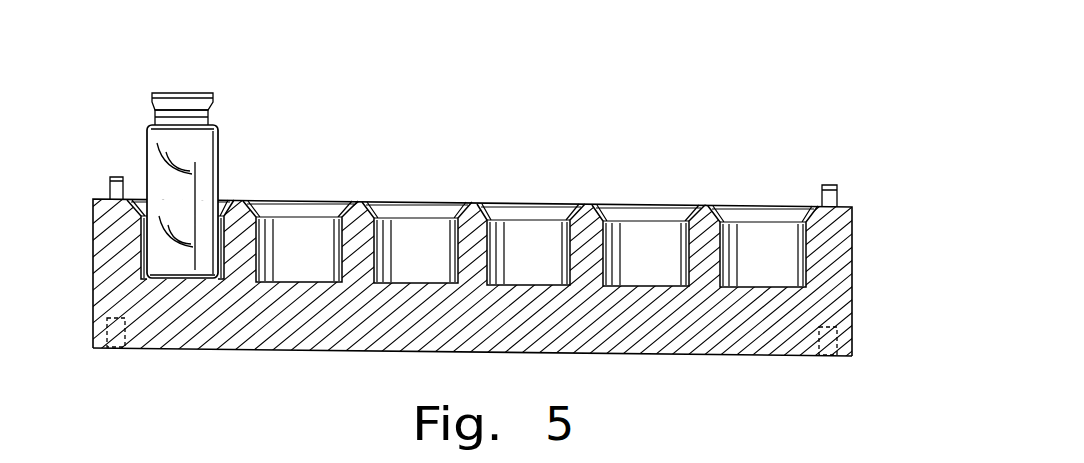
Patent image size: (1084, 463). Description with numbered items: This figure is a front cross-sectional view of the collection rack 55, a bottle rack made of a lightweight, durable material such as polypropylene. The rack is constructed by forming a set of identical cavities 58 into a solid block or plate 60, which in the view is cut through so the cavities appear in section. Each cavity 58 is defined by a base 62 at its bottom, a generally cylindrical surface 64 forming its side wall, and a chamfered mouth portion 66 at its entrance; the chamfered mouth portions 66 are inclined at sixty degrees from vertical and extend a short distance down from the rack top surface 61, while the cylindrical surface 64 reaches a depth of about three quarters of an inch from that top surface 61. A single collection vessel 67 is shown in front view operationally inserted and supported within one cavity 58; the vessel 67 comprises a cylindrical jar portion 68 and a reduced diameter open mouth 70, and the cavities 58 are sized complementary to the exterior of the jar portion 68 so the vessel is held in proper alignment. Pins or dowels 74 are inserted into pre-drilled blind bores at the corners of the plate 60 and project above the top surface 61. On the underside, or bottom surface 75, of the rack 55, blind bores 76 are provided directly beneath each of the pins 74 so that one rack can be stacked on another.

The collection rack 55 is at (542, 243).
The cavities 58 is at (472, 204).
The solid block or plate 60 is at (850, 294).
The rack top surface 61 is at (703, 208).
The base 62 is at (530, 222).
The cylindrical surface 64 is at (572, 236).
The chamfered mouth portion 66 is at (485, 210).
The collection vessel 67 is at (228, 174).
The cylindrical jar portion 68 is at (222, 178).
The reduced diameter open mouth 70 is at (215, 95).
The pins or dowels 74 is at (114, 176).
The bottom surface 75 is at (298, 350).
The blind bores 76 is at (117, 350).